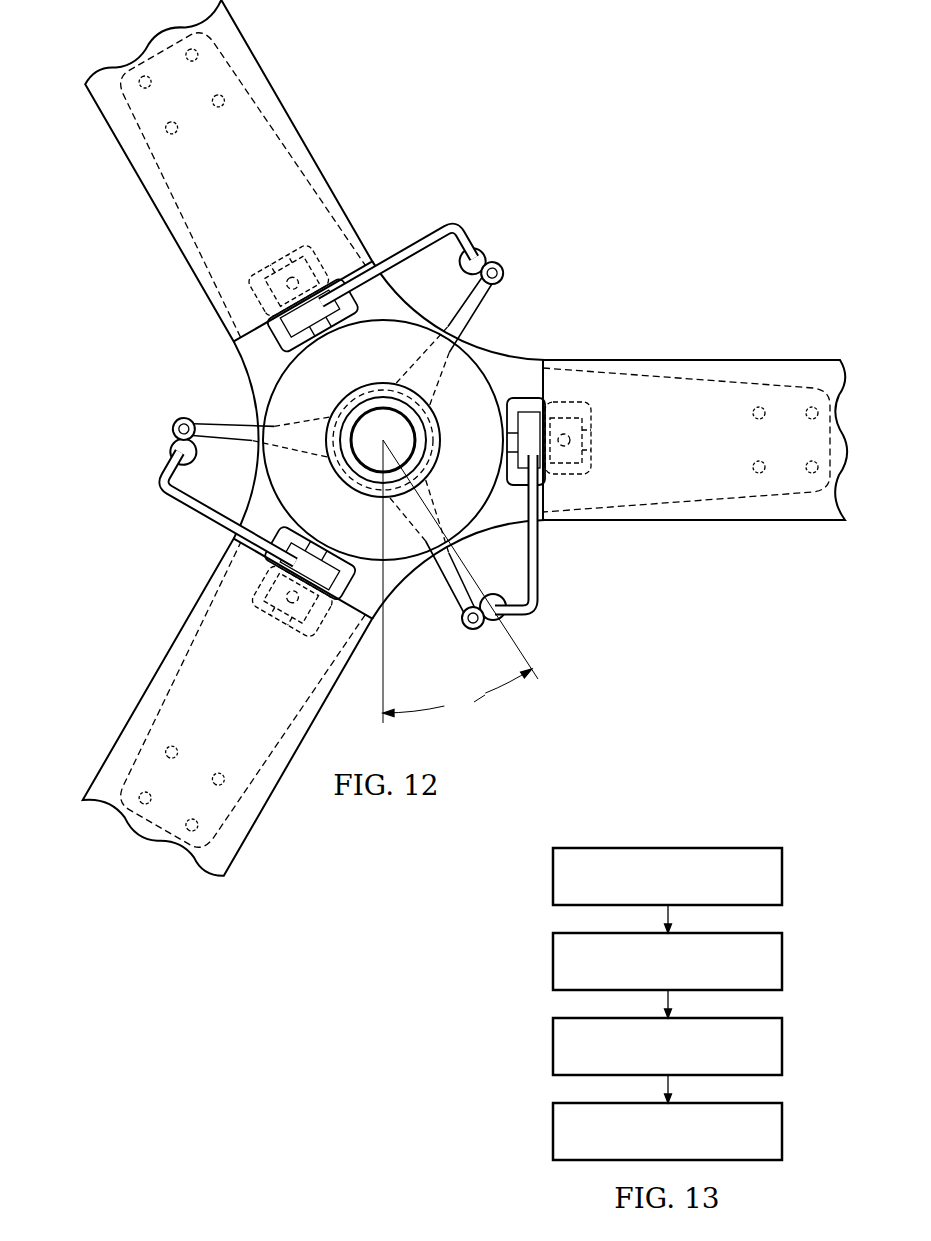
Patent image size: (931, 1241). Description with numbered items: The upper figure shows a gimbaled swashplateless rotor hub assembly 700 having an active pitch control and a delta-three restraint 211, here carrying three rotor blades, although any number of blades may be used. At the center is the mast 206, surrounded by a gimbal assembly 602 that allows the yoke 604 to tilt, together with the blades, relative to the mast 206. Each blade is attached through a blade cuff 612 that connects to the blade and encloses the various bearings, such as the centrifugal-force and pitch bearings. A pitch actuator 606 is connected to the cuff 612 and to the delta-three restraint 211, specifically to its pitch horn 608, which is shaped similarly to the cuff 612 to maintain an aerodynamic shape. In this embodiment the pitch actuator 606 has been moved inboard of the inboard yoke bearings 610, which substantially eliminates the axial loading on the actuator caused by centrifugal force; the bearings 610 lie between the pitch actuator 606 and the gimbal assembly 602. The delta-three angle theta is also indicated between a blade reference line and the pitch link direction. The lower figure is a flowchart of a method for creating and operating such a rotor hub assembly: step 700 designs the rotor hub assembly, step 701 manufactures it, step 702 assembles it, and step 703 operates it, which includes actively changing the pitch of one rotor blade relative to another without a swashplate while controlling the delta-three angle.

In FIG. 12, the gimbaled swashplateless rotor hub assembly 700 is at (578, 113).
In FIG. 13, the gimbaled swashplateless rotor hub assembly 700 is at (782, 876).
In FIG. 13, the manufacturing step 701 is at (782, 960).
In FIG. 13, the assembling step 702 is at (782, 1046).
In FIG. 13, the operating step 703 is at (782, 1132).
In FIG. 12, the mast 206 is at (385, 394).
In FIG. 12, the delta-3 restraint 211 is at (499, 241).
In FIG. 12, the gimbal assembly 602 is at (405, 318).
In FIG. 12, the yoke 604 is at (492, 352).
In FIG. 12, the pitch actuator 606 is at (300, 330).
In FIG. 12, the pitch horn 608 is at (427, 240).
In FIG. 12, the inboard yoke bearings 610 is at (307, 248).
In FIG. 12, the blade cuff 612 is at (130, 168).